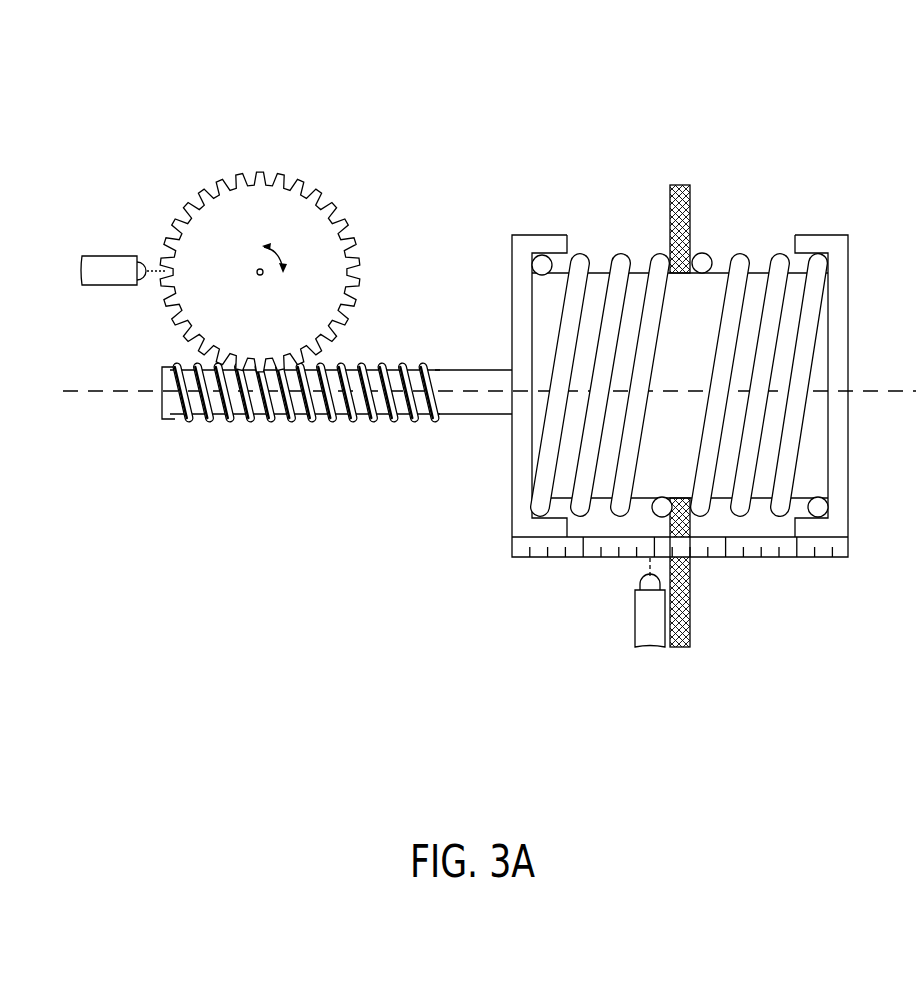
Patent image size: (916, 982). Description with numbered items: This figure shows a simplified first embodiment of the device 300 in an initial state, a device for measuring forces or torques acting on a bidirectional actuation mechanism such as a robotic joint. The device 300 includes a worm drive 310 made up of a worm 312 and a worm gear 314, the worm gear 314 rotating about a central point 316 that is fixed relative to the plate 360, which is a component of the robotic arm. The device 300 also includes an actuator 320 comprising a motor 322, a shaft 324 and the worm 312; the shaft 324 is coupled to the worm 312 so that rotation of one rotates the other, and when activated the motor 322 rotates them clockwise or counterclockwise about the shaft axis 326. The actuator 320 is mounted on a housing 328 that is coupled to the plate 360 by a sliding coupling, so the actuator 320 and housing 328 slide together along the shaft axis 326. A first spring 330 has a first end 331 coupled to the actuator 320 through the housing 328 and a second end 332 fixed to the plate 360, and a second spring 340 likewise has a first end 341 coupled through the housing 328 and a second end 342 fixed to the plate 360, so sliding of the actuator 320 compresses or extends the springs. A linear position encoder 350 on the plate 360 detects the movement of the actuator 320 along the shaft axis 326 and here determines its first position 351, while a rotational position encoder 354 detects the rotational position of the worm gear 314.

The device 300 is at (137, 60).
The worm drive 310 is at (137, 346).
The worm 312 is at (250, 420).
The worm gear 314 is at (287, 182).
The central point 316 is at (258, 268).
The actuator 320 is at (462, 531).
The motor 322 is at (690, 292).
The shaft 324 is at (483, 389).
The shaft axis 326 is at (103, 392).
The housing 328 is at (843, 530).
The first spring 330 is at (627, 268).
The first end of first spring 331 is at (540, 265).
The second end of first spring 332 is at (662, 507).
The second spring 340 is at (780, 267).
The first end of second spring 341 is at (822, 507).
The second end of second spring 342 is at (702, 263).
The linear position encoder 350 is at (647, 617).
The first position 351 is at (648, 558).
The rotational position encoder 354 is at (117, 267).
The plate 360 is at (682, 643).